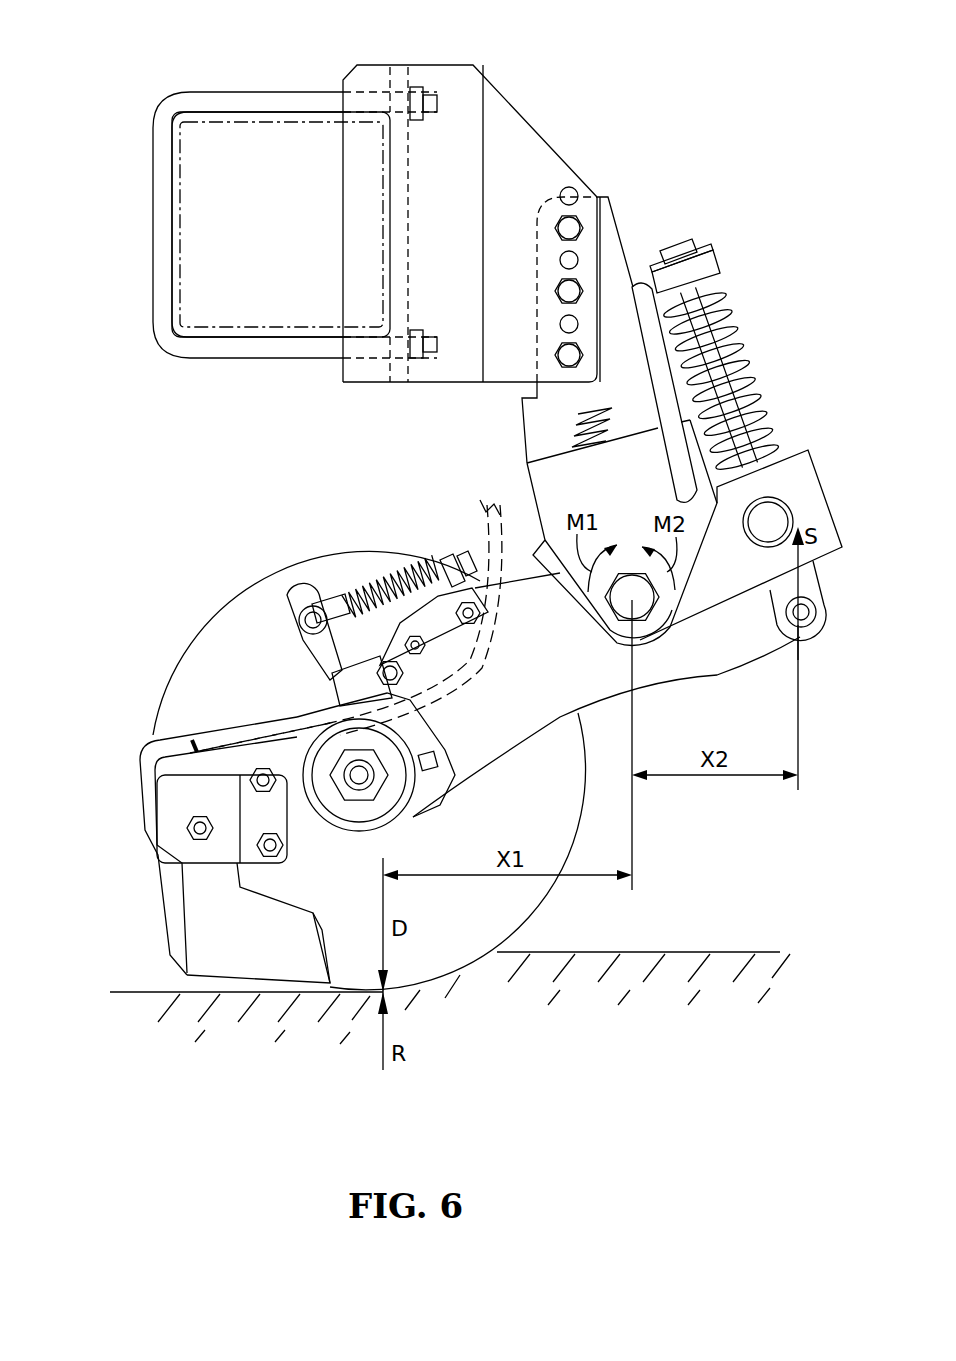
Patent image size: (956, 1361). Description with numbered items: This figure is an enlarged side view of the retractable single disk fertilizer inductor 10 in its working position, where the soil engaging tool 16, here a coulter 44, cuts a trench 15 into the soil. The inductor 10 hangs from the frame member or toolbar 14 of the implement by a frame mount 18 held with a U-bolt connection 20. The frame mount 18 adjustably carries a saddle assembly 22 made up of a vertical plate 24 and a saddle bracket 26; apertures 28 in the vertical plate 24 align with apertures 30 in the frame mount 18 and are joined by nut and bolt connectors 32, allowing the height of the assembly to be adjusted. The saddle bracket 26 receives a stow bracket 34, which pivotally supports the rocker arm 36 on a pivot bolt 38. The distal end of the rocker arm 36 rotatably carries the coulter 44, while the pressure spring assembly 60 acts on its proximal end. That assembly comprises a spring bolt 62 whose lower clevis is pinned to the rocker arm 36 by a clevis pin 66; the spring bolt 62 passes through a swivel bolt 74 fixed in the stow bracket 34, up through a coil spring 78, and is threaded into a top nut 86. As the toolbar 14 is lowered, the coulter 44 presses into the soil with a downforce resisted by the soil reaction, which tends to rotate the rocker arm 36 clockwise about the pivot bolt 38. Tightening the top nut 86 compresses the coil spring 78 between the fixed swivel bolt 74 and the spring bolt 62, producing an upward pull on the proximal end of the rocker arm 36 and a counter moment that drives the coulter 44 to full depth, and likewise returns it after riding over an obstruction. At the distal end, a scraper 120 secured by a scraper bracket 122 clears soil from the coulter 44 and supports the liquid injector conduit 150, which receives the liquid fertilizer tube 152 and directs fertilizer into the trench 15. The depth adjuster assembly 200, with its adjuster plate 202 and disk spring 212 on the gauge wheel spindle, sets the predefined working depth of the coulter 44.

The retractable single disk fertilizer inductor 10 is at (800, 255).
The frame member or toolbar 14 is at (315, 125).
The trench 15 is at (167, 953).
The soil engaging tool 16 is at (215, 575).
The frame mount 18 is at (578, 110).
The U-bolt connection 20 is at (207, 100).
The saddle assembly 22 is at (638, 212).
The vertical plate 24 is at (540, 437).
The saddle bracket 26 is at (557, 487).
The apertures 28 is at (569, 228).
The apertures 30 is at (648, 188).
The nut and bolt connectors 32 is at (671, 220).
The stow bracket 34 is at (805, 455).
The rocker arm 36 is at (488, 743).
The pivot bolt 38 is at (645, 608).
The coulter 44 is at (230, 635).
The pressure spring assembly 60 is at (790, 362).
The spring bolt 62 is at (704, 292).
The clevis pin 66 is at (809, 622).
The swivel bolt 74 is at (770, 512).
The coil spring 78 is at (745, 330).
The top nut 86 is at (683, 258).
The scraper 120 is at (233, 957).
The scraper bracket 122 is at (192, 797).
The liquid injector conduit 150 is at (150, 745).
The liquid fertilizer tube 152 is at (247, 730).
The depth adjuster assembly 200 is at (360, 535).
The adjuster plate 202 is at (413, 735).
The disk spring 212 is at (405, 748).